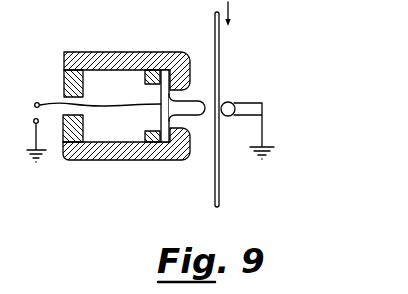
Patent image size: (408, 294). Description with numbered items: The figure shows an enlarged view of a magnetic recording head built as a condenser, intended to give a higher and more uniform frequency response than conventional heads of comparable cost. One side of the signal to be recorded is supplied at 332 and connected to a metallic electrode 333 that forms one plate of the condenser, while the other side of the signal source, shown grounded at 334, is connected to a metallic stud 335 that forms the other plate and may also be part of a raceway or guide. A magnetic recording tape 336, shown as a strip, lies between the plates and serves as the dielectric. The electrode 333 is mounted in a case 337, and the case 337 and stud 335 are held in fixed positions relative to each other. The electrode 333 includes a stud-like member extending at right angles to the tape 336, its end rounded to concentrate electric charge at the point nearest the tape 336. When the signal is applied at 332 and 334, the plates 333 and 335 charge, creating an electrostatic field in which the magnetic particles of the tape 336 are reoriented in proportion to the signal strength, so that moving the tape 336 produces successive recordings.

The signal supply connection 332 is at (39, 101).
The metallic electrode 333 is at (183, 101).
The grounded signal connection 334 is at (38, 124).
The metallic stud 335 is at (247, 101).
The magnetic recording tape 336 is at (212, 158).
The case 337 is at (122, 162).